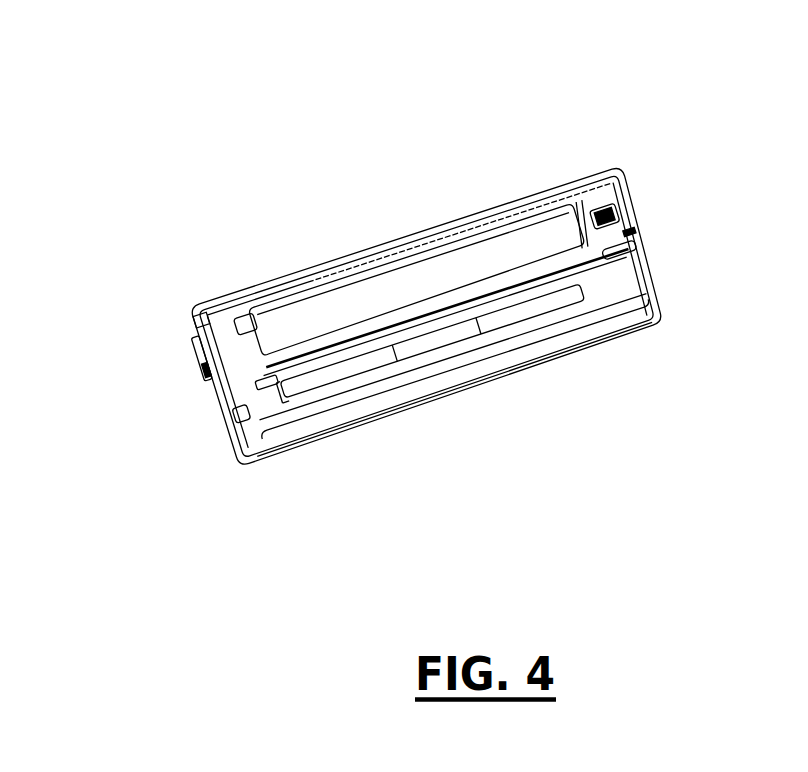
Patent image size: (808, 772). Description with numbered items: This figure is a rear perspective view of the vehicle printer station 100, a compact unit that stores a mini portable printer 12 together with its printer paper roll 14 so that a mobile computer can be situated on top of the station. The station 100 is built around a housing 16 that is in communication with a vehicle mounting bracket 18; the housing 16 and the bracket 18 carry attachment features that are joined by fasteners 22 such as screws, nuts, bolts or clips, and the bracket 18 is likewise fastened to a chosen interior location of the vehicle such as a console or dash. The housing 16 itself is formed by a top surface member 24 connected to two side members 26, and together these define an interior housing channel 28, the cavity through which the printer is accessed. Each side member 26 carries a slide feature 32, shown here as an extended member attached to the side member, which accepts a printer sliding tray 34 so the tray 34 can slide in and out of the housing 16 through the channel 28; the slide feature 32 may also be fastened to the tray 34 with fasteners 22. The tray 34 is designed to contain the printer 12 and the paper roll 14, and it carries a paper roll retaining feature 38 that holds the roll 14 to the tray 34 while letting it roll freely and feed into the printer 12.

The vehicle printer station 100 is at (419, 110).
The mini portable printer 12 is at (238, 325).
The printer paper roll 14 is at (443, 340).
The housing 16 is at (460, 212).
The vehicle mounting bracket 18 is at (443, 390).
The fasteners 22 is at (607, 212).
The top surface member 24 is at (318, 262).
The side members 26 is at (200, 320).
The interior housing channel 28 is at (505, 210).
The slide feature 32 is at (633, 249).
The printer sliding tray 34 is at (262, 385).
The paper roll retaining feature 38 is at (557, 227).